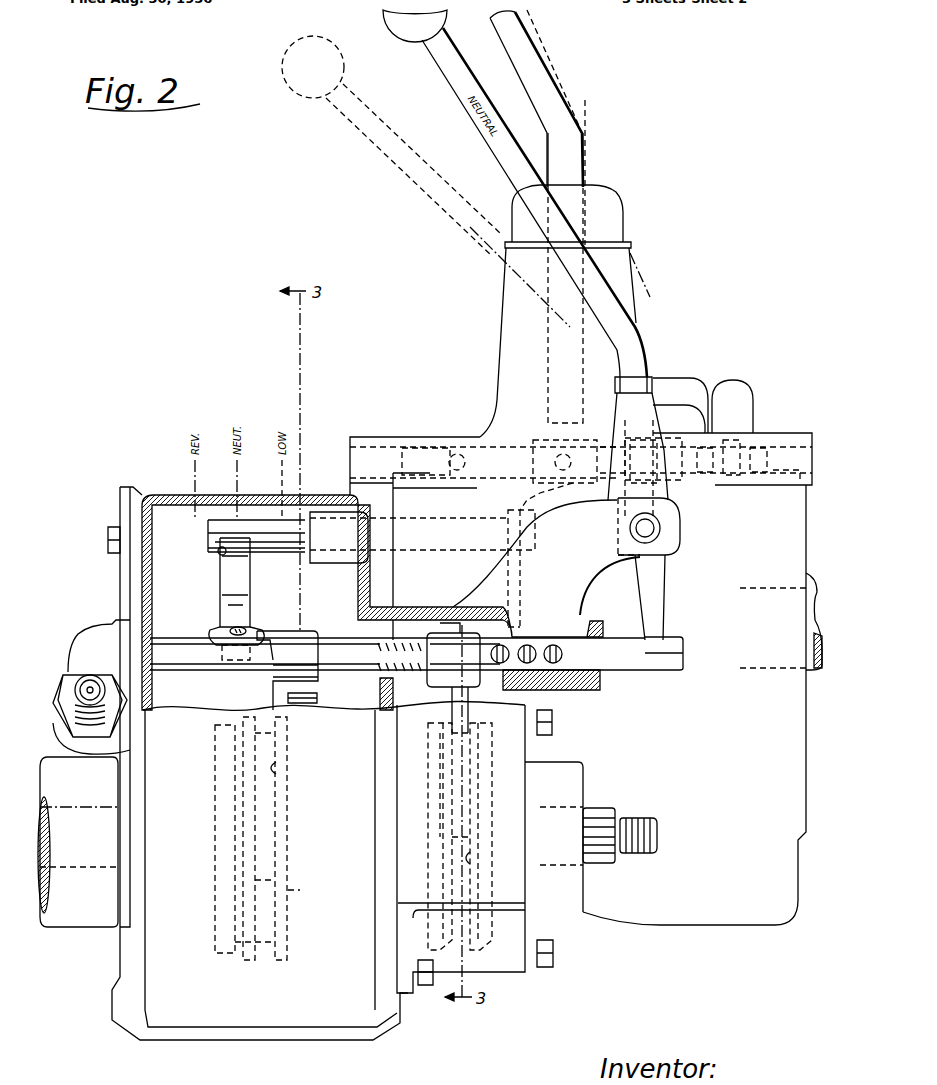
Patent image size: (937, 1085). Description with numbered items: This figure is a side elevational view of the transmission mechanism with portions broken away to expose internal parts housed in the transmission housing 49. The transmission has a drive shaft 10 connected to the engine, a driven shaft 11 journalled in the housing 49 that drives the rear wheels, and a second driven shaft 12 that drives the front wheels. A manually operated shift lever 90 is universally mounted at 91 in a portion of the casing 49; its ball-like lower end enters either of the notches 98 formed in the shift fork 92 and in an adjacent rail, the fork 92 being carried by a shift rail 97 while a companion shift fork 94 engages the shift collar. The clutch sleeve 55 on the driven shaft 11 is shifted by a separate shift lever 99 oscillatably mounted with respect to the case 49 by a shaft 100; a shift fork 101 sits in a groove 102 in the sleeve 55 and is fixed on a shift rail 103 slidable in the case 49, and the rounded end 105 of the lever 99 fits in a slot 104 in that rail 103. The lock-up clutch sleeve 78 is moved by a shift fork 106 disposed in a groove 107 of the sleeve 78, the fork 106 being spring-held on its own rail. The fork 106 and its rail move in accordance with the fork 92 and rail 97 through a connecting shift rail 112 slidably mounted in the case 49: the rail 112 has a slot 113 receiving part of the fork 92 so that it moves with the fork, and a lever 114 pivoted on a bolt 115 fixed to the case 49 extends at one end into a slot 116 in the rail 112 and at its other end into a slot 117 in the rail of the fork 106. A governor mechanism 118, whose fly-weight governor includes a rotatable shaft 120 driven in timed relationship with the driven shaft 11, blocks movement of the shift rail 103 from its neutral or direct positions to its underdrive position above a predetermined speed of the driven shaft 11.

The drive shaft 10 is at (806, 575).
The driven shaft 11 is at (46, 801).
The second driven shaft 12 is at (600, 808).
The housing 49 is at (781, 538).
The clutch sleeve 55 is at (292, 893).
The sleeve 78 is at (426, 838).
The shift lever 90 is at (573, 172).
The universal mounting 91 is at (625, 215).
The shift fork 92 is at (520, 580).
The shift fork 94 is at (677, 500).
The shift rail 97 is at (487, 447).
The notch 98 is at (552, 440).
The shift lever 99 is at (388, 124).
The shaft 100 is at (655, 530).
The shift fork 101 is at (266, 693).
The groove 102 is at (278, 770).
The shift rail 103 is at (622, 668).
The slot 104 is at (660, 640).
The rounded end 105 is at (655, 668).
The shift fork 106 is at (455, 691).
The groove 107 is at (473, 858).
The shift rail 112 is at (281, 552).
The slot 113 is at (508, 533).
The lever 114 is at (220, 588).
The bolt 115 is at (242, 629).
The slot 116 is at (219, 553).
The slot 117 is at (213, 629).
The governor mechanism 118 is at (58, 670).
The rotatable shaft 120 is at (90, 684).